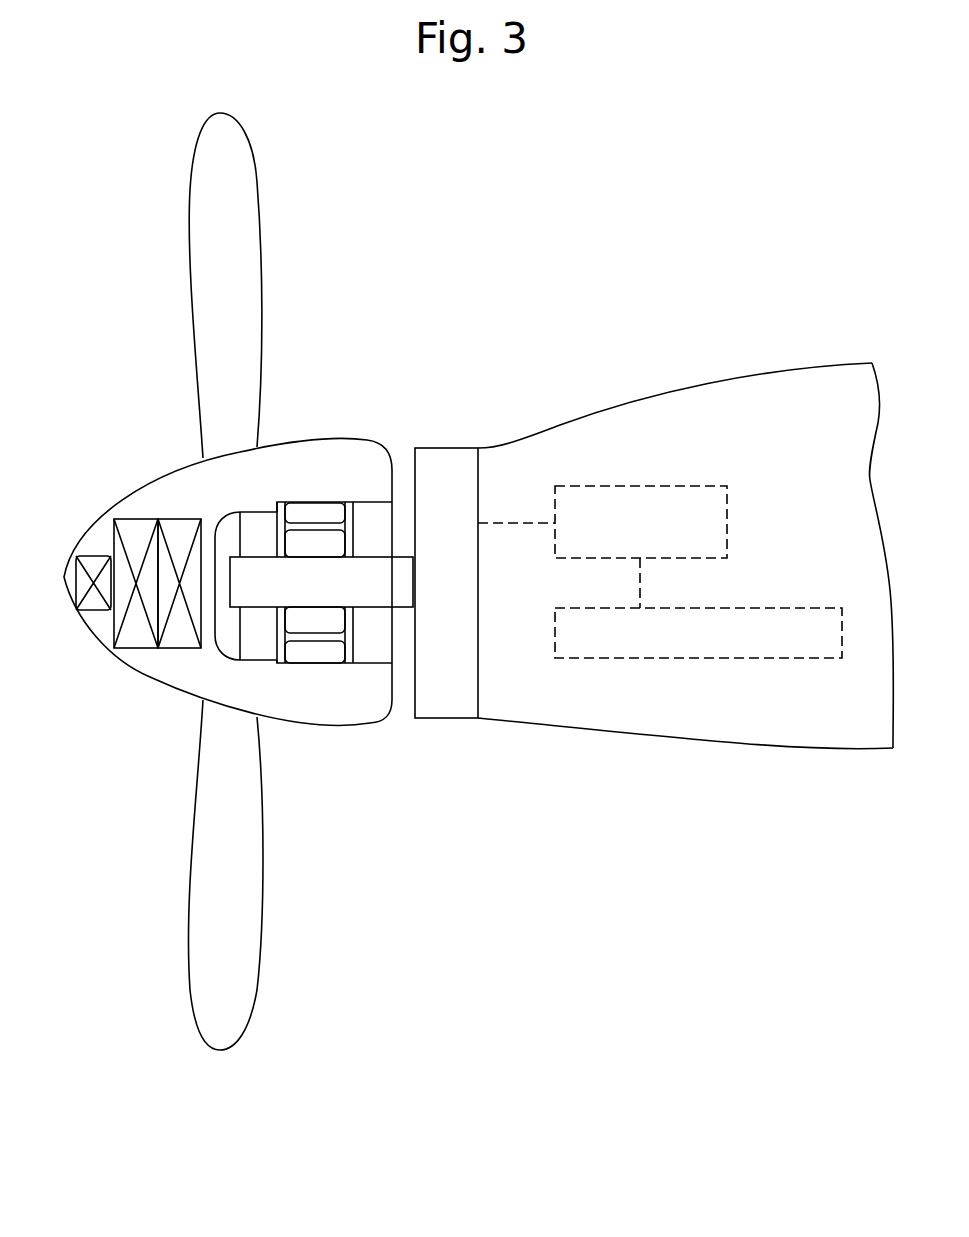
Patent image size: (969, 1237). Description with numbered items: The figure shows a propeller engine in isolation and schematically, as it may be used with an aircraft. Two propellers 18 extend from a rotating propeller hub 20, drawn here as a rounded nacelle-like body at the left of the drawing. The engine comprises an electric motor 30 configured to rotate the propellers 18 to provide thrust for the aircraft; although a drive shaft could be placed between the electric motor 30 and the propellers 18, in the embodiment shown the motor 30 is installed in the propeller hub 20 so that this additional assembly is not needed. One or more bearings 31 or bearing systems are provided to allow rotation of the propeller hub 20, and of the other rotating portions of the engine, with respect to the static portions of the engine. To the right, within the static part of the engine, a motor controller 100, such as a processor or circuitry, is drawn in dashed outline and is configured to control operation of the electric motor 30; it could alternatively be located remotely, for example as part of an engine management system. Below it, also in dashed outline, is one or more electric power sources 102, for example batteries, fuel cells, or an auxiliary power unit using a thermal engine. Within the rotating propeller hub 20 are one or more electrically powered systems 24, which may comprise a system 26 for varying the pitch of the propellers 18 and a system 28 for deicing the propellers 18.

The propeller 18 is at (237, 222).
The propeller hub 20 is at (150, 677).
The electrically powered system 24 is at (90, 556).
The system for varying a pitch of the propellers 26 is at (132, 518).
The system for deicing the propellers 28 is at (167, 518).
The electric motor 30 is at (330, 661).
The bearing 31 is at (252, 517).
The motor controller 100 is at (605, 485).
The electric power source 102 is at (716, 658).